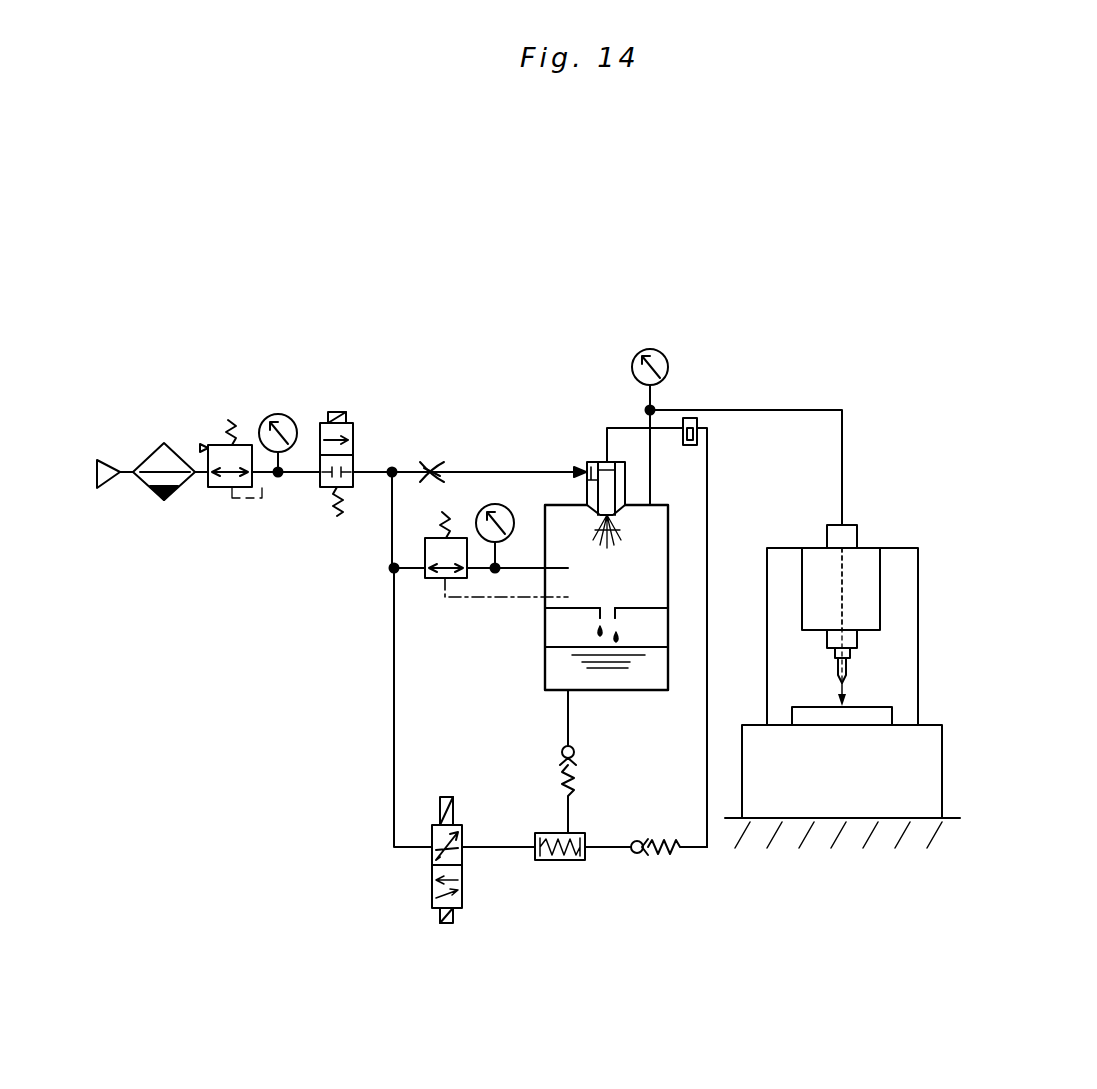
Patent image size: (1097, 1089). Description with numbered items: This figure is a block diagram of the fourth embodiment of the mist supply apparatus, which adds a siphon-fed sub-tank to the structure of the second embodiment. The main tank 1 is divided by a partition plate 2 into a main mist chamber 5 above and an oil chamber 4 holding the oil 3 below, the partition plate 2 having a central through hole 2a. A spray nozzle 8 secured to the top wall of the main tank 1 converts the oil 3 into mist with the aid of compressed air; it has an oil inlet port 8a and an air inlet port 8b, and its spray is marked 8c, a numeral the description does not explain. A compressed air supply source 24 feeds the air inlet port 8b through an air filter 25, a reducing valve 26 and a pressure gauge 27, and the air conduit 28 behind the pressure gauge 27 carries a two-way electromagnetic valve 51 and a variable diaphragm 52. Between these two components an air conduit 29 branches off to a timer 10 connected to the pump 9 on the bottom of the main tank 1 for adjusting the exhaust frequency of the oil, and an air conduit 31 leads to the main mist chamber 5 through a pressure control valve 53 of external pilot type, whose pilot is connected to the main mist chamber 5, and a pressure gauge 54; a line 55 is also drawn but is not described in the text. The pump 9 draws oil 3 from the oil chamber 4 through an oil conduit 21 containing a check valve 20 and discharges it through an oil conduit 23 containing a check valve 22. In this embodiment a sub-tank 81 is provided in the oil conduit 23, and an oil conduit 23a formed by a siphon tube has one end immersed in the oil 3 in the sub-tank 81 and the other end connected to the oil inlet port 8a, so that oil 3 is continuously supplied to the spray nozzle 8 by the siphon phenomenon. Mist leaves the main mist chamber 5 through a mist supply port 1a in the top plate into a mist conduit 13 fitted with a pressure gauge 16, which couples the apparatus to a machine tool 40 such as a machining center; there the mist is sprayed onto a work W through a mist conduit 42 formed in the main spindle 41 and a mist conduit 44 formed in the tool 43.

The main tank 1 is at (668, 537).
The mist supply port 1a is at (651, 504).
The partition plate 2 is at (643, 609).
The through hole 2a is at (606, 612).
The oil 3 is at (647, 662).
The oil chamber 4 is at (567, 630).
The main mist chamber 5 is at (560, 522).
The spray nozzle 8 is at (632, 470).
The oil inlet port 8a is at (606, 452).
The air inlet port 8b is at (588, 466).
The spray 8c is at (620, 528).
The pump 9 is at (560, 862).
The timer 10 is at (430, 868).
The mist conduit 13 is at (812, 408).
The pressure gauge 16 is at (650, 348).
The check valve 20 is at (558, 770).
The oil conduit 21 is at (570, 722).
The check valve 22 is at (650, 856).
The oil conduit 23 is at (707, 782).
The oil conduit 23a is at (648, 503).
The compressed air supply source 24 is at (105, 458).
The air filter 25 is at (168, 462).
The reducing valve 26 is at (227, 420).
The pressure gauge 27 is at (282, 412).
The air conduit 28 is at (372, 470).
The air conduit 29 is at (394, 778).
The air conduit 31 is at (415, 566).
The machine tool 40 is at (890, 540).
The main spindle 41 is at (882, 592).
The mist conduit 42 is at (845, 578).
The tool 43 is at (848, 668).
The mist conduit 44 is at (845, 700).
The two-way electromagnetic valve 51 is at (338, 410).
The variable diaphragm 52 is at (432, 462).
The pressure control valve 53 is at (440, 574).
The pressure gauge 54 is at (494, 503).
The pilot line 55 is at (467, 600).
The sub-tank 81 is at (691, 418).
The work W is at (878, 718).